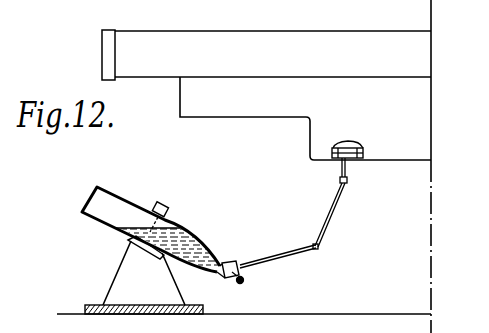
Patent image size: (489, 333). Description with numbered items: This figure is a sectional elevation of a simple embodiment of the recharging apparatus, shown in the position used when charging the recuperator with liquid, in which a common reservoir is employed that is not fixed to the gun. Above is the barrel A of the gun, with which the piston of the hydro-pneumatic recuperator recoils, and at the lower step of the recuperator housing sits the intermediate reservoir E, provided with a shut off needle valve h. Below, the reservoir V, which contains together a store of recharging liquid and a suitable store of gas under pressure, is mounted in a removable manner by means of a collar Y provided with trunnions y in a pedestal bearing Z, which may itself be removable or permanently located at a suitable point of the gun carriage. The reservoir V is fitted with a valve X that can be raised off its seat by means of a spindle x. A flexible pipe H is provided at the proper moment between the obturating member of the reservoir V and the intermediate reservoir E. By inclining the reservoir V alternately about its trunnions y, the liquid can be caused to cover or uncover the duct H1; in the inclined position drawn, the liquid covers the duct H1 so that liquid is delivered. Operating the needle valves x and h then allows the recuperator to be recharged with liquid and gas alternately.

The barrel A is at (154, 63).
The intermediate reservoir E is at (359, 160).
The shut off needle valve h is at (337, 160).
The flexible pipe H is at (326, 212).
The spindle x is at (245, 270).
The duct H1 is at (227, 263).
The valve X is at (235, 281).
The reservoir V is at (117, 207).
The trunnions y is at (166, 220).
The collar Y is at (128, 247).
The pedestal bearing Z is at (128, 276).